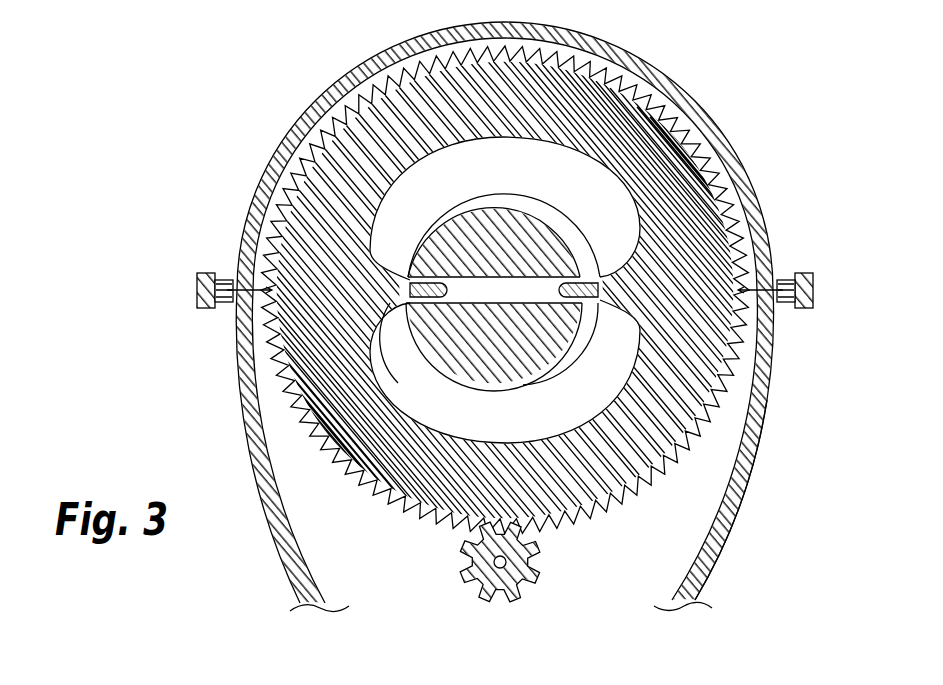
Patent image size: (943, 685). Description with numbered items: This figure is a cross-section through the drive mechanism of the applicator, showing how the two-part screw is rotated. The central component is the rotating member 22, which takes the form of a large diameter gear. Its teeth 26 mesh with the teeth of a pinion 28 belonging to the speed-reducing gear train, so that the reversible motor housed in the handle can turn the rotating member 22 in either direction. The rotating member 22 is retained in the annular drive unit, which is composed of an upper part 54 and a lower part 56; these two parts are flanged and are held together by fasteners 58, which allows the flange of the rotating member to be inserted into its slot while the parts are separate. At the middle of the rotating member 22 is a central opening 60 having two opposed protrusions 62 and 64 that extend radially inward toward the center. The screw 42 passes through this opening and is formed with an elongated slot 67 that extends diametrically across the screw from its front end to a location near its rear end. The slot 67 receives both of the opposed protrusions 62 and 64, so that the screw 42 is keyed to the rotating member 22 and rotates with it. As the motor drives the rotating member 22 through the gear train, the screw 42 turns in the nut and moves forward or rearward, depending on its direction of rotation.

The rotating member 22 is at (578, 526).
The teeth 26 is at (374, 497).
The pinion 28 is at (480, 587).
The screw 42 is at (453, 230).
The upper part 54 is at (764, 217).
The lower part 56 is at (760, 444).
The fasteners 58 is at (207, 272).
The central opening 60 is at (562, 181).
The protrusion 62 is at (620, 366).
The protrusion 64 is at (402, 383).
The elongated slot 67 is at (512, 290).